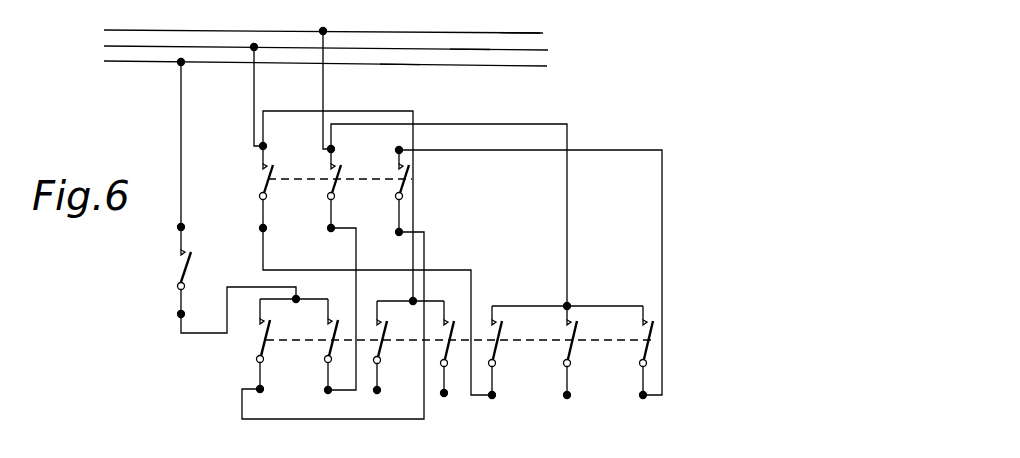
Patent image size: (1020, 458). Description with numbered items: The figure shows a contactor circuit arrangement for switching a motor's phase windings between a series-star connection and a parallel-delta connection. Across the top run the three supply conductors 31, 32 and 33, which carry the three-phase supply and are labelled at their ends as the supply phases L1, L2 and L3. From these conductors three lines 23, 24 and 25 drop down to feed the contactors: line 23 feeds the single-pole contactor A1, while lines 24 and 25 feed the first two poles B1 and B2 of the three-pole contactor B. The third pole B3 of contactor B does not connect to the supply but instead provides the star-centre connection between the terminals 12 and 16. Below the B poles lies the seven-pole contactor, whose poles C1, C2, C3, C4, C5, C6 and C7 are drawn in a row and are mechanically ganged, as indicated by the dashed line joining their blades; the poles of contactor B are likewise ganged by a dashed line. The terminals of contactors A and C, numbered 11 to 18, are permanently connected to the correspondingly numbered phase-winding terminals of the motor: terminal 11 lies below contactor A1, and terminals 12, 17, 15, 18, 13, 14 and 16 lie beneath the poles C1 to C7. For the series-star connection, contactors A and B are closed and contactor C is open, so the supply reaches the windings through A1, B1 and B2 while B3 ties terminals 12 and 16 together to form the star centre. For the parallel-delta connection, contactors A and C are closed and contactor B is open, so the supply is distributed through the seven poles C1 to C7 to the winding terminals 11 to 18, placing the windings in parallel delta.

The supply line L1 is at (335, 80).
The supply line L2 is at (346, 55).
The supply line L3 is at (336, 26).
The supply conductor 31 is at (399, 67).
The supply conductor 32 is at (470, 51).
The supply conductor 33 is at (520, 34).
The line 23 is at (181, 117).
The line 24 is at (254, 100).
The line 25 is at (323, 89).
The single-pole contactor A1 is at (186, 262).
The pole of three-pole contactor B1 is at (268, 186).
The pole of three-pole contactor B2 is at (336, 186).
The pole of three-pole contactor B3 is at (405, 189).
The pole of seven-pole contactor C1 is at (266, 345).
The pole of seven-pole contactor C2 is at (332, 342).
The pole of seven-pole contactor C3 is at (383, 344).
The pole of seven-pole contactor C4 is at (449, 345).
The pole of seven-pole contactor C5 is at (498, 346).
The pole of seven-pole contactor C6 is at (573, 346).
The pole of seven-pole contactor C7 is at (640, 357).
The contactor terminal 11 is at (223, 310).
The contactor terminal 12 is at (270, 399).
The contactor terminal 13 is at (499, 410).
The contactor terminal 14 is at (567, 410).
The contactor terminal 15 is at (385, 400).
The contactor terminal 16 is at (645, 410).
The contactor terminal 17 is at (338, 400).
The contactor terminal 18 is at (437, 400).